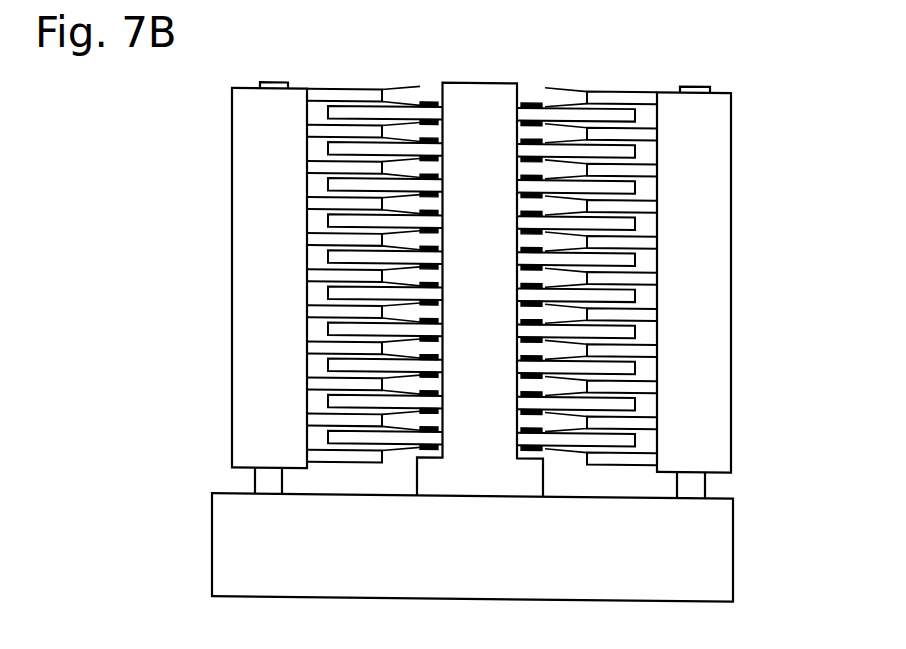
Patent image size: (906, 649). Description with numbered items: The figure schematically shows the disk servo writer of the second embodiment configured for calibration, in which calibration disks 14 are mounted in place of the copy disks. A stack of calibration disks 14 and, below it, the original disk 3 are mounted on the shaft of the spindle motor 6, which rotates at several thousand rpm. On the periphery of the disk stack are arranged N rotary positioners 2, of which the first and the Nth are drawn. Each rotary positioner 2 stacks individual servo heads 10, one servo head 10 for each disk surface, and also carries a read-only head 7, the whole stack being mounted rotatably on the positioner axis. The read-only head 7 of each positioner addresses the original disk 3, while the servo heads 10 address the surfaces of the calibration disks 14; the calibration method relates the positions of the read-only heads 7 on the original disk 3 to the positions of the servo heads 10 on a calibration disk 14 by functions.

The rotary positioner 2 is at (249, 98).
The original disk 3 is at (335, 438).
The spindle motor 6 is at (470, 483).
The read-only head 7 is at (400, 452).
The servo head 10 is at (397, 98).
The calibration disk 14 is at (226, 93).